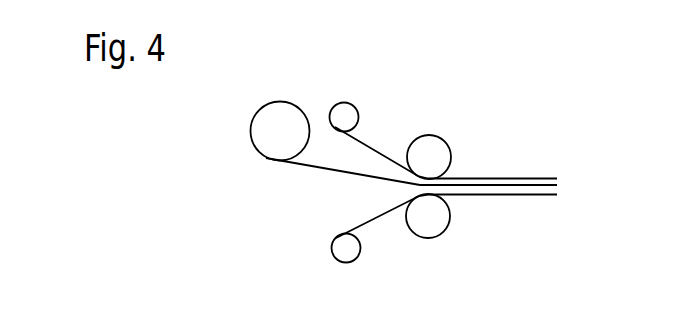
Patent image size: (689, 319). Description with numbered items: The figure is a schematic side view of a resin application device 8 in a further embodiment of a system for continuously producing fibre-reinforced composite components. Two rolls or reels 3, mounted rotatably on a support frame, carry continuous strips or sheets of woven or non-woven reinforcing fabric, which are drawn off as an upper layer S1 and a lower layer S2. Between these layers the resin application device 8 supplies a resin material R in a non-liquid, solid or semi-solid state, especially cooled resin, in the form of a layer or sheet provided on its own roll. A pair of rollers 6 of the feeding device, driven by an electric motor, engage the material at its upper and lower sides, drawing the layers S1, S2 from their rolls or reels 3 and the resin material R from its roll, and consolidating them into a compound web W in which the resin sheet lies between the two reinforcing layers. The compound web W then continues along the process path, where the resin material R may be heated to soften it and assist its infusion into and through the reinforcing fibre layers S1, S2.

The resin application device 8 is at (224, 132).
The resin material R is at (304, 186).
The rolls or reels 3 is at (344, 102).
The first reinforcing layer S1 is at (376, 146).
The second reinforcing layer S2 is at (373, 220).
The rollers 6 is at (428, 134).
The compound web W is at (509, 164).